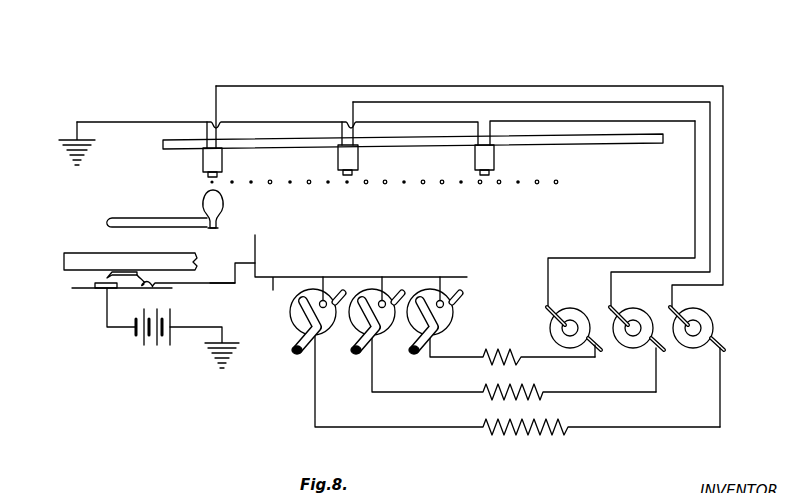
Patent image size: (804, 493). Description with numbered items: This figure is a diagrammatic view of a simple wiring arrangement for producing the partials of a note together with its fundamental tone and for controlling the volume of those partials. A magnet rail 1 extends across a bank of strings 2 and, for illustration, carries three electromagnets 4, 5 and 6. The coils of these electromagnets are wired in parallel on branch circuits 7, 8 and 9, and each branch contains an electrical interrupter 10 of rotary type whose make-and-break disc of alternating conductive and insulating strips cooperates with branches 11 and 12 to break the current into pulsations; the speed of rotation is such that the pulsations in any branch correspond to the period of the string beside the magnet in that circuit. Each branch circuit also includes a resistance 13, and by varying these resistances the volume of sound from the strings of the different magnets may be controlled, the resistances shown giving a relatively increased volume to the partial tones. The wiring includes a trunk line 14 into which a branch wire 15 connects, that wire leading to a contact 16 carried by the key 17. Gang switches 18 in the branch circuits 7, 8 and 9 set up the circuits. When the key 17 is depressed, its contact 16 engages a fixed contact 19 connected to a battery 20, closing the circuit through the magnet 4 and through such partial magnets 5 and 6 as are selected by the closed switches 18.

The magnet rail 1 is at (604, 141).
The bank of strings 2 is at (309, 181).
The electromagnet 4 is at (203, 161).
The electromagnet 5 is at (358, 160).
The electromagnet 6 is at (494, 158).
The branch circuit 7 is at (695, 185).
The branch circuit 8 is at (710, 154).
The branch circuit 9 is at (723, 128).
The electrical interrupter 10 is at (573, 309).
The branch 11 is at (547, 314).
The branch 12 is at (600, 349).
The resistance 13 is at (499, 347).
The trunk line 14 is at (299, 277).
The branch wire 15 is at (211, 283).
The contact 16 is at (118, 272).
The key 17 is at (74, 258).
The gang switch 18 is at (292, 330).
The fixed contact 19 is at (101, 290).
The battery 20 is at (152, 342).